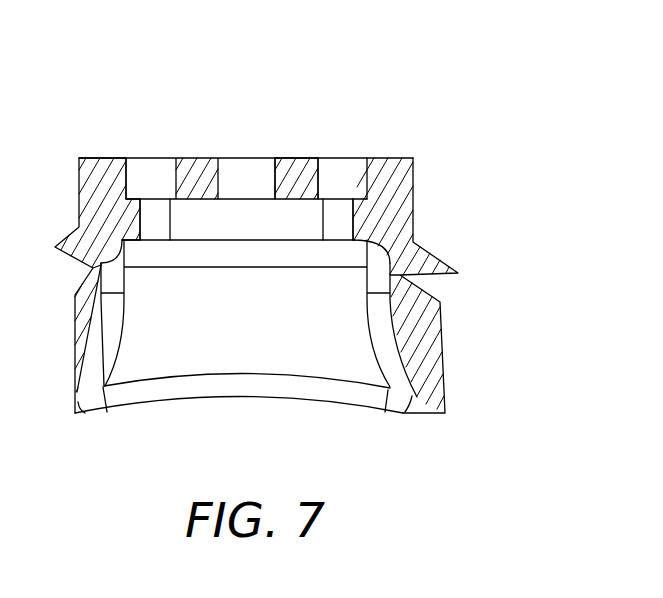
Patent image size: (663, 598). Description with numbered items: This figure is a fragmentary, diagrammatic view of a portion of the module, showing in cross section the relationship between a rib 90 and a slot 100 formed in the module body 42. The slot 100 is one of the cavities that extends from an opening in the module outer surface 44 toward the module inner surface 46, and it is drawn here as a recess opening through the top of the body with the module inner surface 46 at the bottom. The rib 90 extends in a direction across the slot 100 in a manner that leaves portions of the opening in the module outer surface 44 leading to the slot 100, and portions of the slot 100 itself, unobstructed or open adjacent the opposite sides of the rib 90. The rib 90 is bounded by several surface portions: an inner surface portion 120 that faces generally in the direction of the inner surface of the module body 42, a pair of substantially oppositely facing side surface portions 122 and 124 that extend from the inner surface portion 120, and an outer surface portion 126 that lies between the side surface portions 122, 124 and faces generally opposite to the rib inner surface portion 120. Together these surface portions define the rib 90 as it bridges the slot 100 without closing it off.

The module body 42 is at (423, 323).
The module outer surface 44 is at (108, 158).
The module inner surface 46 is at (243, 398).
The rib 90 is at (280, 160).
The slot 100 is at (227, 227).
The inner surface portion 120 is at (297, 199).
The side surface portion 122 is at (273, 180).
The side surface portion 124 is at (318, 175).
The outer surface portion 126 is at (301, 158).